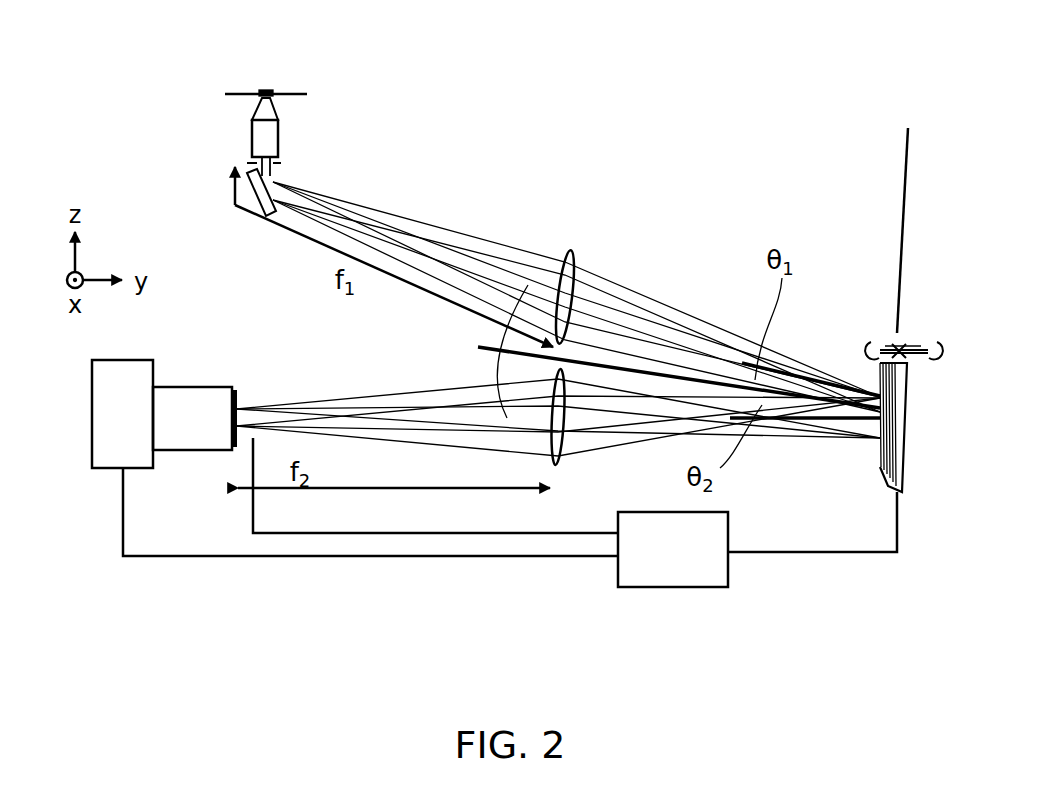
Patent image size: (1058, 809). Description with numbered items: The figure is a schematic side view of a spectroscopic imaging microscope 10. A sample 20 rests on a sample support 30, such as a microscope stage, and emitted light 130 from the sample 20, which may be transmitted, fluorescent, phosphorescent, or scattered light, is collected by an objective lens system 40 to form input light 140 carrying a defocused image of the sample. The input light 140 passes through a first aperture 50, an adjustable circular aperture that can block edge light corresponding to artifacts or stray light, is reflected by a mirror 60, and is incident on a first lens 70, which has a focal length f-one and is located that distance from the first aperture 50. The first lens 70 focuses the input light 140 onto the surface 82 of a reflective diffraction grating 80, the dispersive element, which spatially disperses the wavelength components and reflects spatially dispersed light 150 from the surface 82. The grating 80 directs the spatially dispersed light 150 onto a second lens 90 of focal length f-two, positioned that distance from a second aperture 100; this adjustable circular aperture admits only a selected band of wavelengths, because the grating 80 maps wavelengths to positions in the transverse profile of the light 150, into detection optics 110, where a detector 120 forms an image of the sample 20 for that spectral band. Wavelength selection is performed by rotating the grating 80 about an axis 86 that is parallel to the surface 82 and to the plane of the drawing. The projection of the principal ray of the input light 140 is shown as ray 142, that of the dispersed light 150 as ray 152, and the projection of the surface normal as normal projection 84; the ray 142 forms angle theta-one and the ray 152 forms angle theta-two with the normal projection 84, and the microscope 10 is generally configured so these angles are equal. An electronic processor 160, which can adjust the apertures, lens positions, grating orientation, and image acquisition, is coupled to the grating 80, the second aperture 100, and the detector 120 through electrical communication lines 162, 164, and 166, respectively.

The microscope 10 is at (622, 151).
The sample 20 is at (268, 89).
The sample support 30 is at (300, 96).
The objective lens system 40 is at (255, 137).
The first aperture 50 is at (282, 178).
The mirror 60 is at (267, 219).
The first lens 70 is at (582, 271).
The diffraction grating 80 is at (906, 431).
The surface 82 is at (878, 466).
The normal projection 84 is at (505, 340).
The axis 86 is at (902, 197).
The second lens 90 is at (563, 463).
The second aperture 100 is at (238, 395).
The detection optics 110 is at (171, 429).
The detector 120 is at (100, 429).
The emitted light 130 is at (259, 98).
The input light 140 is at (352, 221).
The ray 142 is at (793, 380).
The spatially dispersed light 150 is at (410, 418).
The ray 152 is at (788, 416).
The electronic processor 160 is at (651, 563).
The electrical communication line 162 is at (898, 526).
The electrical communication line 164 is at (432, 532).
The electrical communication line 166 is at (383, 561).